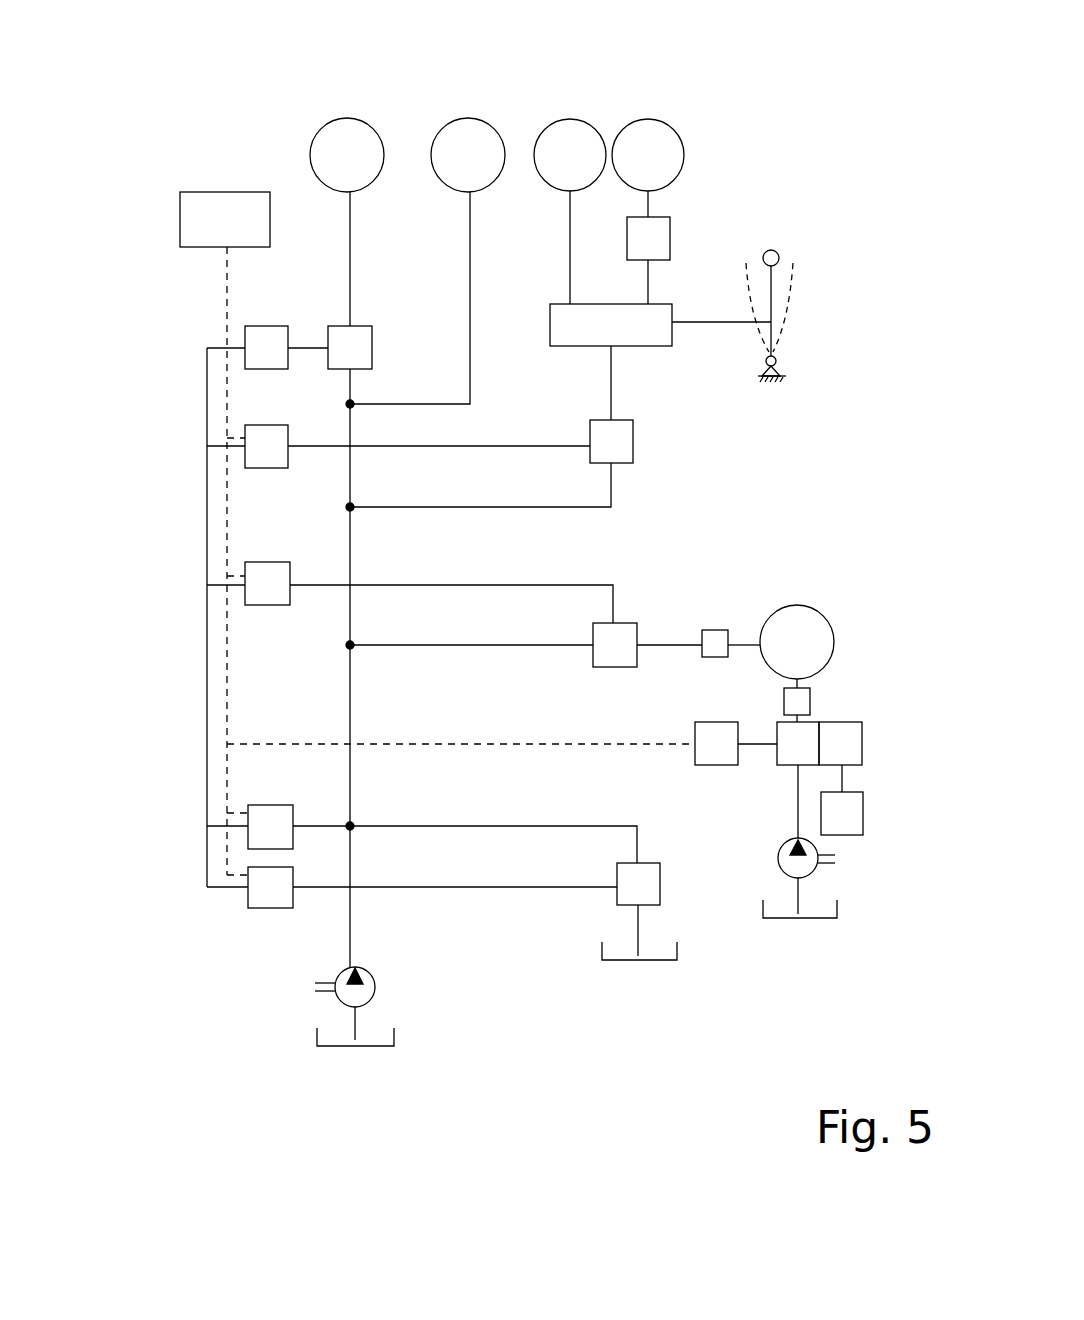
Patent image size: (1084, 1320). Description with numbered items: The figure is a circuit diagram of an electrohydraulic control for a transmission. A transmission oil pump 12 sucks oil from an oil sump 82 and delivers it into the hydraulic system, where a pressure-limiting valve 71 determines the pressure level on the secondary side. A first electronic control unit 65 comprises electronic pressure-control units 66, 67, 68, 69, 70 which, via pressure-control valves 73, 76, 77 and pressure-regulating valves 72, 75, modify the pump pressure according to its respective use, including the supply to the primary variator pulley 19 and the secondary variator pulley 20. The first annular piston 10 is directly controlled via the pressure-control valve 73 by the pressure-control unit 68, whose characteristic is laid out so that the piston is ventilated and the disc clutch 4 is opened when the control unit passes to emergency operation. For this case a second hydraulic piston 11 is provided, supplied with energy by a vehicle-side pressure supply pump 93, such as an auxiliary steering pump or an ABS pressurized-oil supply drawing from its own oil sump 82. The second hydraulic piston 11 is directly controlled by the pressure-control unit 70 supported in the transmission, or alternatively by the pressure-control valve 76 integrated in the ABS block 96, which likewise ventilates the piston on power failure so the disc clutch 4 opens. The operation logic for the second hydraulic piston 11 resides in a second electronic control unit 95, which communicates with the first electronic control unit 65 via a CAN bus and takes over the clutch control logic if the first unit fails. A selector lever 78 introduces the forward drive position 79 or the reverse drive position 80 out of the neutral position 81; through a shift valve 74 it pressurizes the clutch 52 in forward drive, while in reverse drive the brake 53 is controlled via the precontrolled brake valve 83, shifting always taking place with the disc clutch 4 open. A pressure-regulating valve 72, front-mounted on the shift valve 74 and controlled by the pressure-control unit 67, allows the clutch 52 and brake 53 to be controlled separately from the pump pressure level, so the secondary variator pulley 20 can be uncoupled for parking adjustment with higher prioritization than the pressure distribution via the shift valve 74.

The disc clutch 4 is at (843, 589).
The first annular piston 10 is at (814, 541).
The second hydraulic piston 11 is at (857, 646).
The transmission oil pump 12 is at (352, 993).
The primary variator pulley 19 is at (357, 140).
The secondary variator pulley 20 is at (480, 145).
The clutch 52 is at (580, 140).
The brake 53 is at (648, 133).
The first electronic control unit 65 is at (203, 233).
The electronic pressure-control unit 66 is at (262, 893).
The electronic pressure-control unit 67 is at (255, 457).
The electronic pressure-control unit 68 is at (255, 590).
The electronic pressure-control unit 69 is at (257, 355).
The electronic pressure-control unit 70 is at (712, 768).
The pressure-limiting valve 71 is at (627, 880).
The pressure-regulating valve 72 is at (620, 447).
The pressure-control valve 73 is at (663, 586).
The shift valve 74 is at (712, 176).
The pressure-regulating valve 75 is at (340, 336).
The pressure-control valve 76 is at (853, 708).
The pressure-control valve 77 is at (258, 812).
The selector lever 78 is at (771, 293).
The forward drive position 79 is at (791, 277).
The reverse drive position 80 is at (757, 308).
The neutral position 81 is at (771, 240).
The oil sump 82 is at (362, 1048).
The precontrolled brake valve 83 is at (699, 133).
The pressure supply pump 93 is at (856, 913).
The second electronic control unit 95 is at (877, 836).
The ABS block 96 is at (833, 753).